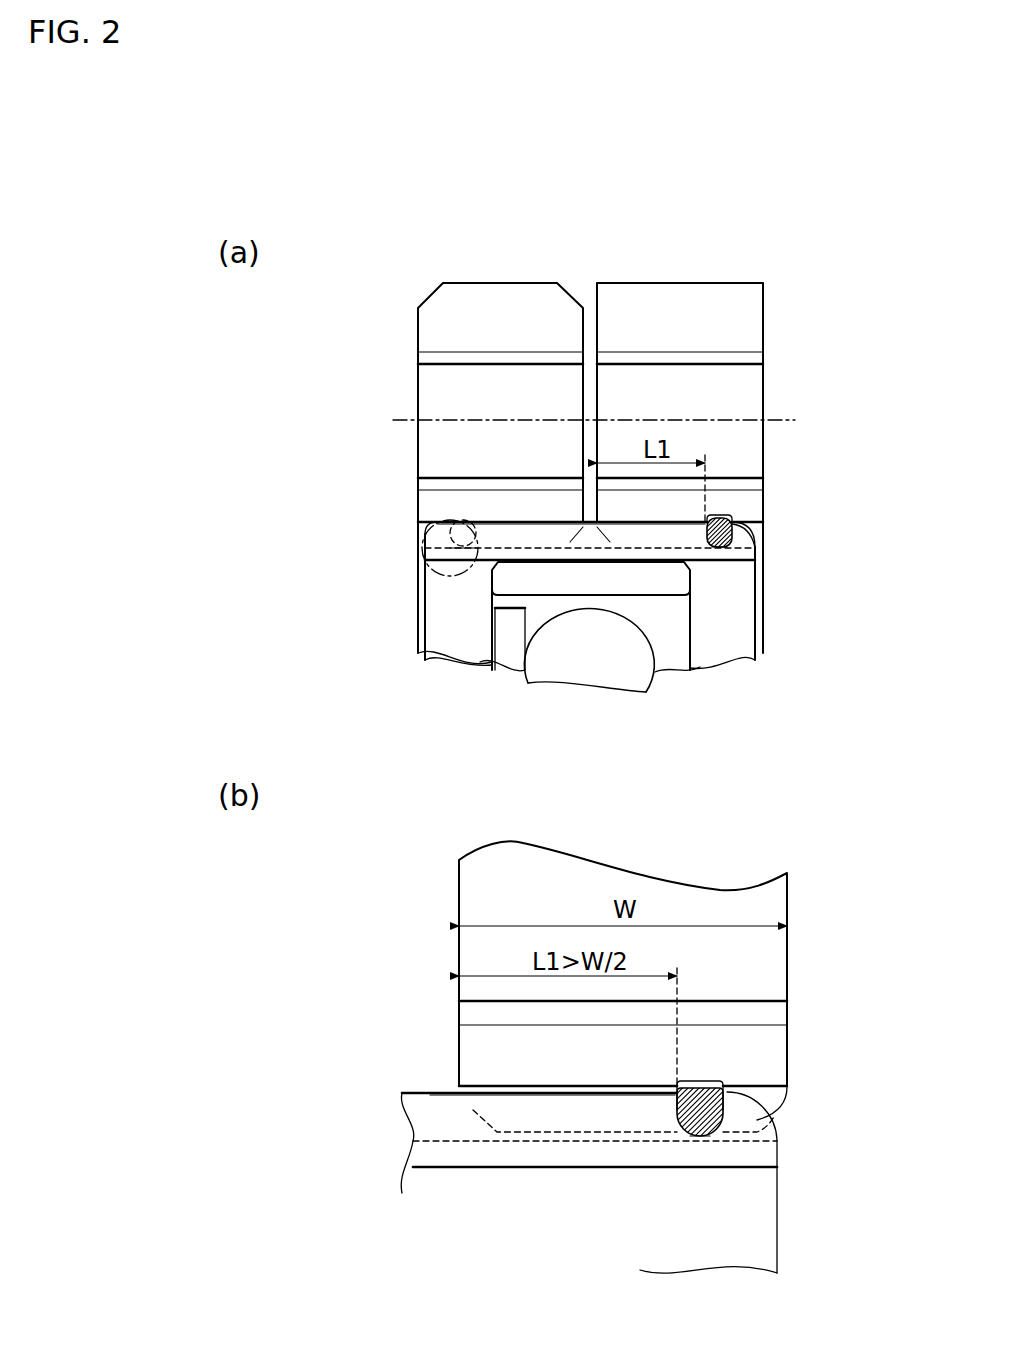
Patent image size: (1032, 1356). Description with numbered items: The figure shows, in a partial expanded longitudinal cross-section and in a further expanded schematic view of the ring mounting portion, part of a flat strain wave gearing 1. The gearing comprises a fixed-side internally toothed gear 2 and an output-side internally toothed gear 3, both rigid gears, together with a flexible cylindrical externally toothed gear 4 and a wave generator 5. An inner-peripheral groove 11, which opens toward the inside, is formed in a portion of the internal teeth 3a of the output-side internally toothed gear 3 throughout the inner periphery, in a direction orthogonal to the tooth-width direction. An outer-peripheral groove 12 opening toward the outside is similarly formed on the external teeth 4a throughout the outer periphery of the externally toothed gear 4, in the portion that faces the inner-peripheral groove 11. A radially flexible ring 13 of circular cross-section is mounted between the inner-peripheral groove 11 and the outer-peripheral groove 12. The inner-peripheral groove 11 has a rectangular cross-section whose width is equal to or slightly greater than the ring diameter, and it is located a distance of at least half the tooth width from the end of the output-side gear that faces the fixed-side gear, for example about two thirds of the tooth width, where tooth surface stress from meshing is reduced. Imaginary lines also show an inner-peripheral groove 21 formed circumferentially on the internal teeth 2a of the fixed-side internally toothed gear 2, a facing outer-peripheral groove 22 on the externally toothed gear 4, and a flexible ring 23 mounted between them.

The flat strain wave gearing 1 is at (800, 278).
The fixed-side internally toothed gear 2 is at (392, 388).
The output-side internally toothed gear 3 is at (800, 388).
The externally toothed gear 4 is at (764, 552).
The wave generator 5 is at (707, 620).
The inner-peripheral groove 11 is at (725, 516).
The outer-peripheral groove 12 is at (730, 556).
The ring 13 is at (738, 520).
The inner-peripheral groove 21 is at (463, 517).
The outer-peripheral groove 22 is at (462, 550).
The flexible ring 23 is at (445, 520).
The internal teeth 2a is at (434, 542).
The internal teeth 3a is at (755, 536).
The external teeth 4a is at (644, 544).